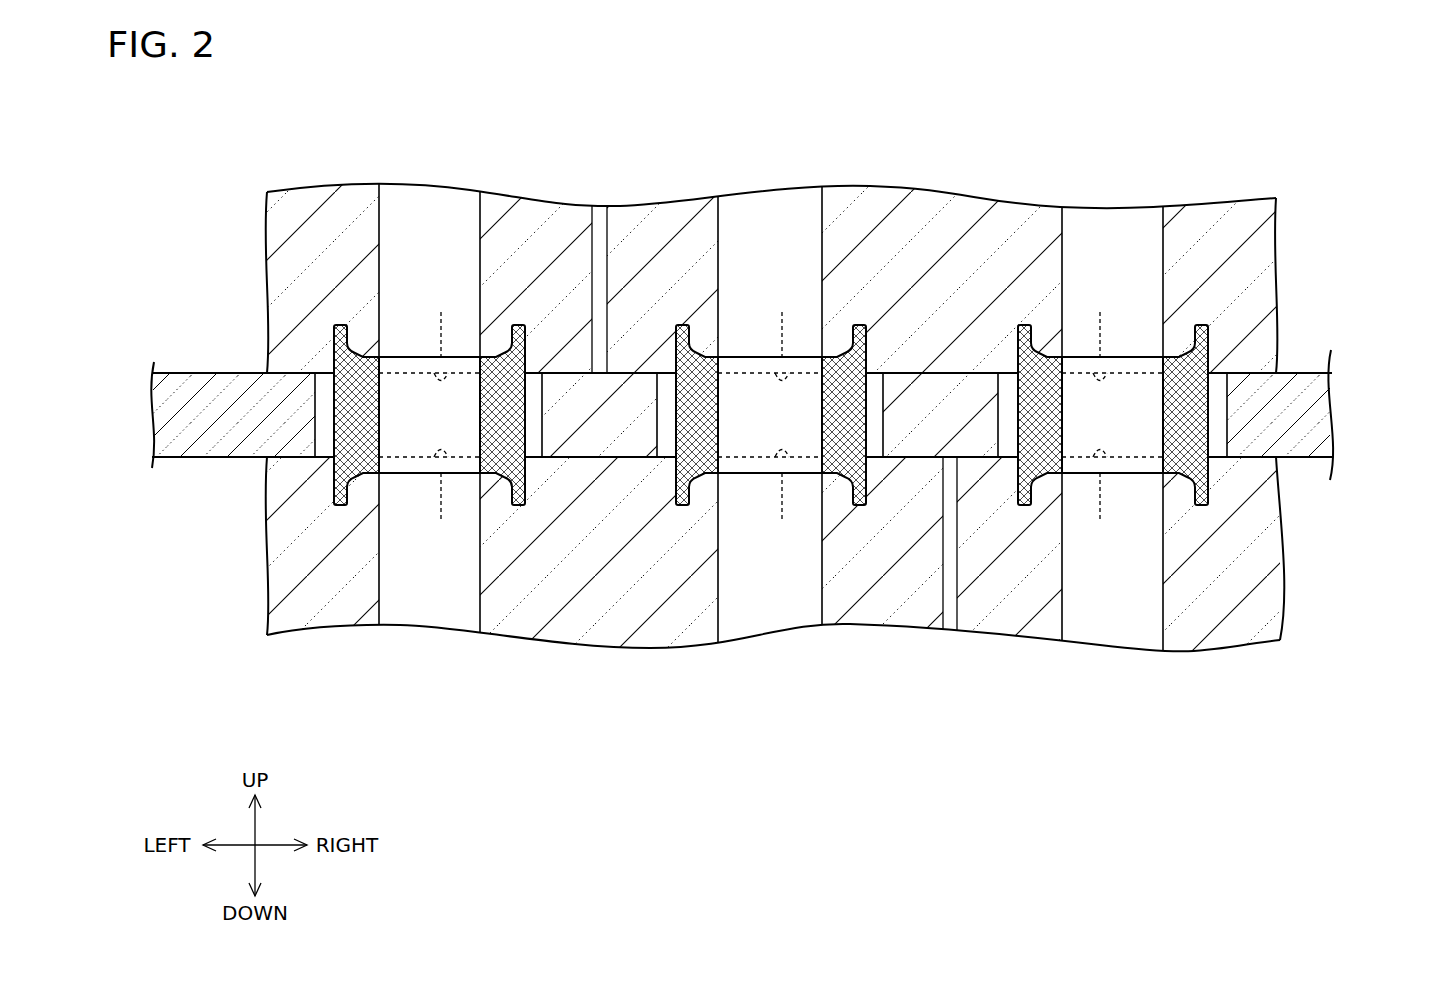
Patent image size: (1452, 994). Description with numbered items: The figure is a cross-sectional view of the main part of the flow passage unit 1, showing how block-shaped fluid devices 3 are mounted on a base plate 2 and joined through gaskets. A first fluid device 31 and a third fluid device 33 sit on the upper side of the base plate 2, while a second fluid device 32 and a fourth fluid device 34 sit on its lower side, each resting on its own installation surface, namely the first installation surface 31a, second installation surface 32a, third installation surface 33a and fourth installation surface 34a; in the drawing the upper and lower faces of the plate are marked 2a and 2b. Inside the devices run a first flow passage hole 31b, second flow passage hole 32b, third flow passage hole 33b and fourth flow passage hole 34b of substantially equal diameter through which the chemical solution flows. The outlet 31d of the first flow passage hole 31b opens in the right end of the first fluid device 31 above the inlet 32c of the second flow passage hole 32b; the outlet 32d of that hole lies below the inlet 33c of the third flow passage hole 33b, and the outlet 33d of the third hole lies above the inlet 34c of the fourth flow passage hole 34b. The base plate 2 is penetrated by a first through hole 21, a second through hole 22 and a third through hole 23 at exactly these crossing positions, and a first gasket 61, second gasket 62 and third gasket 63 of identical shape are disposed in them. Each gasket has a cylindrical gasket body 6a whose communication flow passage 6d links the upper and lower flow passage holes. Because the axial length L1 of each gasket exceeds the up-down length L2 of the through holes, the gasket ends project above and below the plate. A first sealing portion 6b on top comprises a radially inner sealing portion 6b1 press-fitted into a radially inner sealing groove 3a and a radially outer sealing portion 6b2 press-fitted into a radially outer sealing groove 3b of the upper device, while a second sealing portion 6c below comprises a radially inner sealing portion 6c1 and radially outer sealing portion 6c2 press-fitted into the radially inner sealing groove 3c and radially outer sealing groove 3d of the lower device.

The flow passage unit 1 is at (236, 160).
The base plate 2 is at (180, 371).
The upper surface of shaft 2a is at (236, 372).
The lower surface of shaft 2b is at (189, 458).
The first through hole 21 is at (326, 442).
The second through hole 22 is at (660, 445).
The third through hole 23 is at (1222, 440).
The fluid device 3 is at (771, 418).
The radially inner sealing groove 3a is at (484, 356).
The radially outer sealing groove 3b is at (518, 323).
The radially inner sealing groove 3c is at (484, 475).
The radially outer sealing groove 3d is at (518, 507).
The first fluid device 31 is at (262, 229).
The first installation surface 31a is at (568, 395).
The first flow passage hole 31b is at (455, 200).
The outlet of first flow passage hole 31d is at (443, 334).
The second fluid device 32 is at (264, 592).
The second installation surface 32a is at (602, 445).
The second flow passage hole 32b is at (444, 600).
The inlet of second flow passage hole 32c is at (440, 499).
The outlet of second flow passage hole 32d is at (783, 499).
The third fluid device 33 is at (1280, 230).
The third installation surface 33a is at (934, 395).
The third flow passage hole 33b is at (793, 203).
The inlet of third flow passage hole 33c is at (783, 334).
The outlet of third flow passage hole 33d is at (1100, 334).
The fourth fluid device 34 is at (1288, 592).
The fourth installation surface 34a is at (972, 445).
The fourth flow passage hole 34b is at (1097, 620).
The inlet of fourth flow passage hole 34c is at (1100, 499).
The first gasket 61 is at (416, 354).
The second gasket 62 is at (759, 354).
The third gasket 63 is at (1125, 354).
The gasket body 6a is at (370, 403).
The first sealing portion 6b is at (393, 140).
The radially inner sealing portion 6b1 is at (366, 355).
The radially outer sealing portion 6b2 is at (340, 323).
The second sealing portion 6c is at (393, 692).
The radially inner sealing portion 6c1 is at (366, 475).
The radially outer sealing portion 6c2 is at (340, 507).
The communication flow passage 6d is at (442, 427).
The length in axial direction L1 is at (1217, 328).
The length in up-down direction L2 is at (1333, 373).